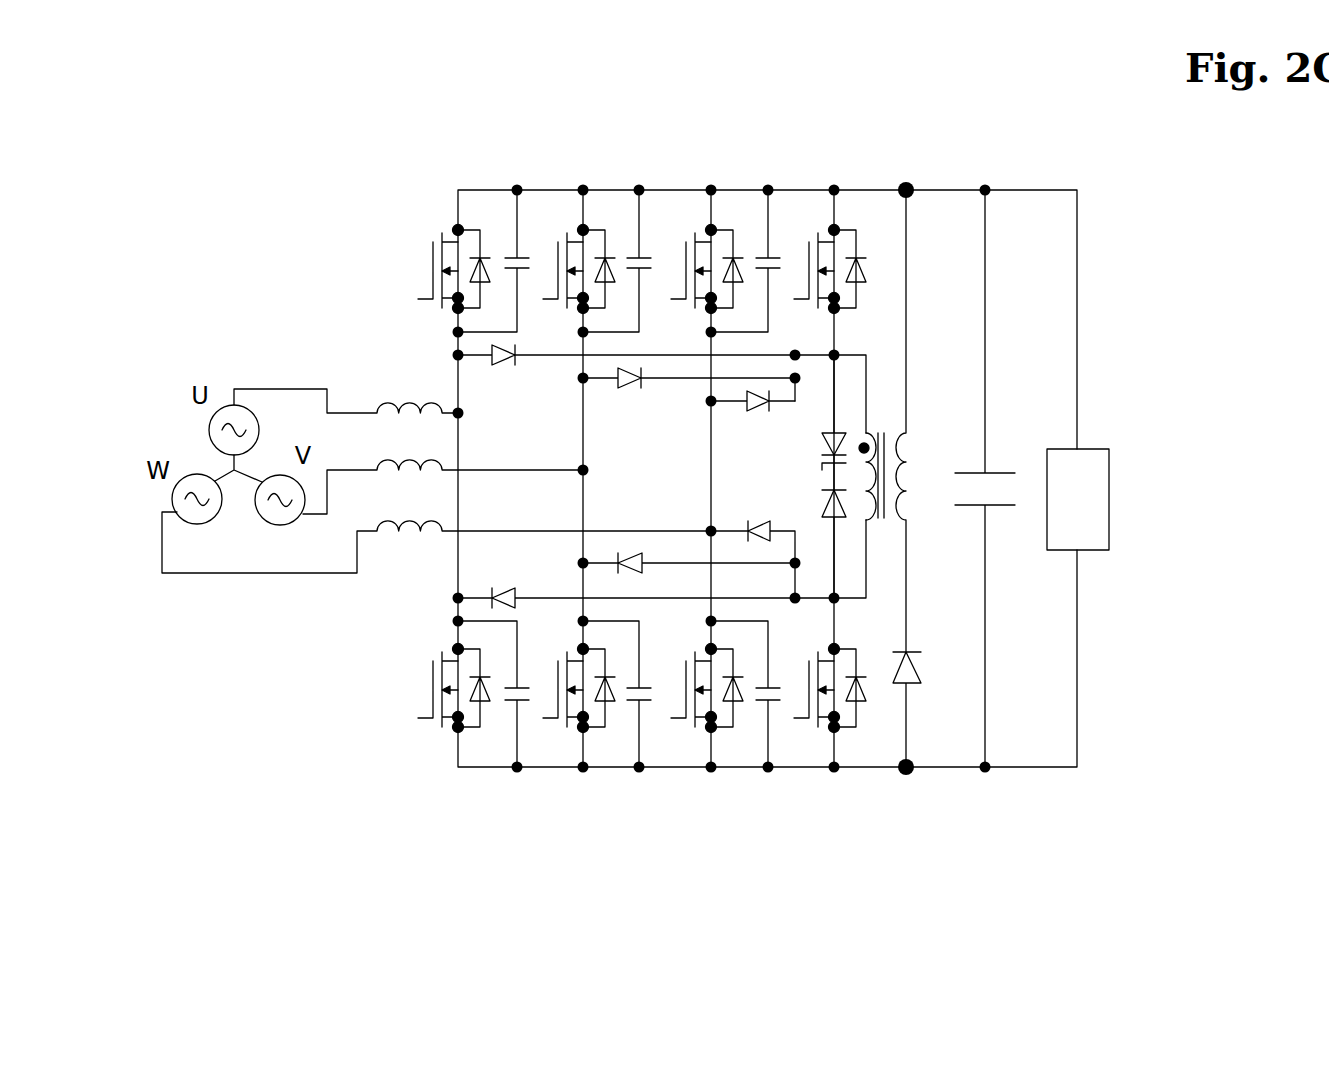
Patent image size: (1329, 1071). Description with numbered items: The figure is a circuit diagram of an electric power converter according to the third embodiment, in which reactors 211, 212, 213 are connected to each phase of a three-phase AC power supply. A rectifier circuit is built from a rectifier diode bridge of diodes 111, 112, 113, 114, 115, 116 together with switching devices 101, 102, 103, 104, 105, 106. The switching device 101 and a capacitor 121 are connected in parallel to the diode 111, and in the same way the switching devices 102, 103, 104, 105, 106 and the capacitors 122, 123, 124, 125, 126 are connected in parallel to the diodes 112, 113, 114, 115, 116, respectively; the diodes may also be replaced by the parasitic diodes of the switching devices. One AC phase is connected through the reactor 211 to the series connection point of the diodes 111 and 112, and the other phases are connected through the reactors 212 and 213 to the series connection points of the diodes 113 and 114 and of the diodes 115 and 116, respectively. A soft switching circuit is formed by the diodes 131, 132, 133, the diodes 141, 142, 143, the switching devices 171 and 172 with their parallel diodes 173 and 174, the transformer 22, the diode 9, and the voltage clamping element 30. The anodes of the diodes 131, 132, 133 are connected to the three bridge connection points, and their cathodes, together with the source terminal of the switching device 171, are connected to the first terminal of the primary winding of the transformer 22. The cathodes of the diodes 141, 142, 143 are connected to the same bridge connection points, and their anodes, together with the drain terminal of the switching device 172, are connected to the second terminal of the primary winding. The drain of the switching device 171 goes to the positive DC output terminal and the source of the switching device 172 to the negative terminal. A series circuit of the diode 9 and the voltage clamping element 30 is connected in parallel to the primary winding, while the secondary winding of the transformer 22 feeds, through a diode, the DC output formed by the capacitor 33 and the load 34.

The switching device 101 is at (447, 226).
The switching device 102 is at (450, 628).
The switching device 103 is at (568, 222).
The switching device 104 is at (563, 737).
The switching device 105 is at (687, 242).
The switching device 106 is at (696, 733).
The diode 111 is at (490, 238).
The diode 112 is at (487, 718).
The diode 113 is at (616, 242).
The diode 114 is at (613, 715).
The diode 115 is at (742, 242).
The diode 116 is at (741, 706).
The capacitor 121 is at (528, 248).
The capacitor 122 is at (528, 706).
The capacitor 123 is at (647, 244).
The capacitor 124 is at (650, 678).
The capacitor 125 is at (775, 248).
The capacitor 126 is at (778, 677).
The diode 131 is at (500, 368).
The diode 132 is at (632, 392).
The diode 133 is at (762, 414).
The diode 141 is at (502, 587).
The diode 142 is at (648, 553).
The diode 143 is at (771, 527).
The switching device 171 is at (822, 222).
The switching device 172 is at (819, 738).
The diode 173 is at (868, 262).
The diode 174 is at (868, 712).
The reactor 211 is at (346, 394).
The reactor 212 is at (443, 473).
The reactor 213 is at (436, 532).
The voltage clamping element 30 is at (848, 425).
The transformer 22 is at (901, 421).
The diode 9 is at (843, 522).
The capacitor 33 is at (993, 462).
The load 34 is at (1065, 562).